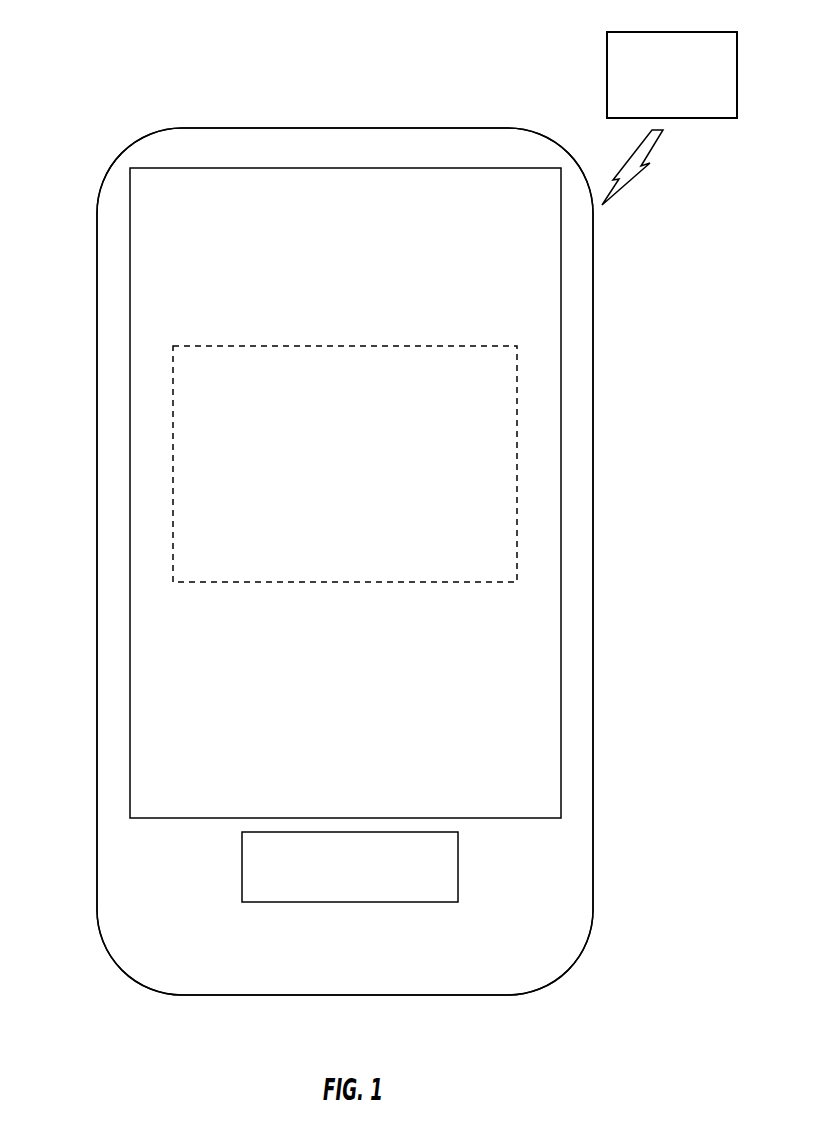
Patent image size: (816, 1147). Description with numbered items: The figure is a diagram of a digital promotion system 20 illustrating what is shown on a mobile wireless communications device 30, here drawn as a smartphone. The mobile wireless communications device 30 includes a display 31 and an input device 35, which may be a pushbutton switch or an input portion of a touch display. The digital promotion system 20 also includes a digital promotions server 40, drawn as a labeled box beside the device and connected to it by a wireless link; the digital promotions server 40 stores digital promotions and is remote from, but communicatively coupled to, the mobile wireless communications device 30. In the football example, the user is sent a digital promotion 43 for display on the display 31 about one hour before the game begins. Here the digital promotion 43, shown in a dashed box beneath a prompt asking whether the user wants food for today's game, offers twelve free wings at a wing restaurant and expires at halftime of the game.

The digital promotion system 20 is at (210, 86).
The mobile wireless communications device 30 is at (172, 1035).
The display 31 is at (143, 720).
The input device 35 is at (247, 877).
The digital promotions server 40 is at (592, 72).
The digital promotion 43 is at (173, 377).